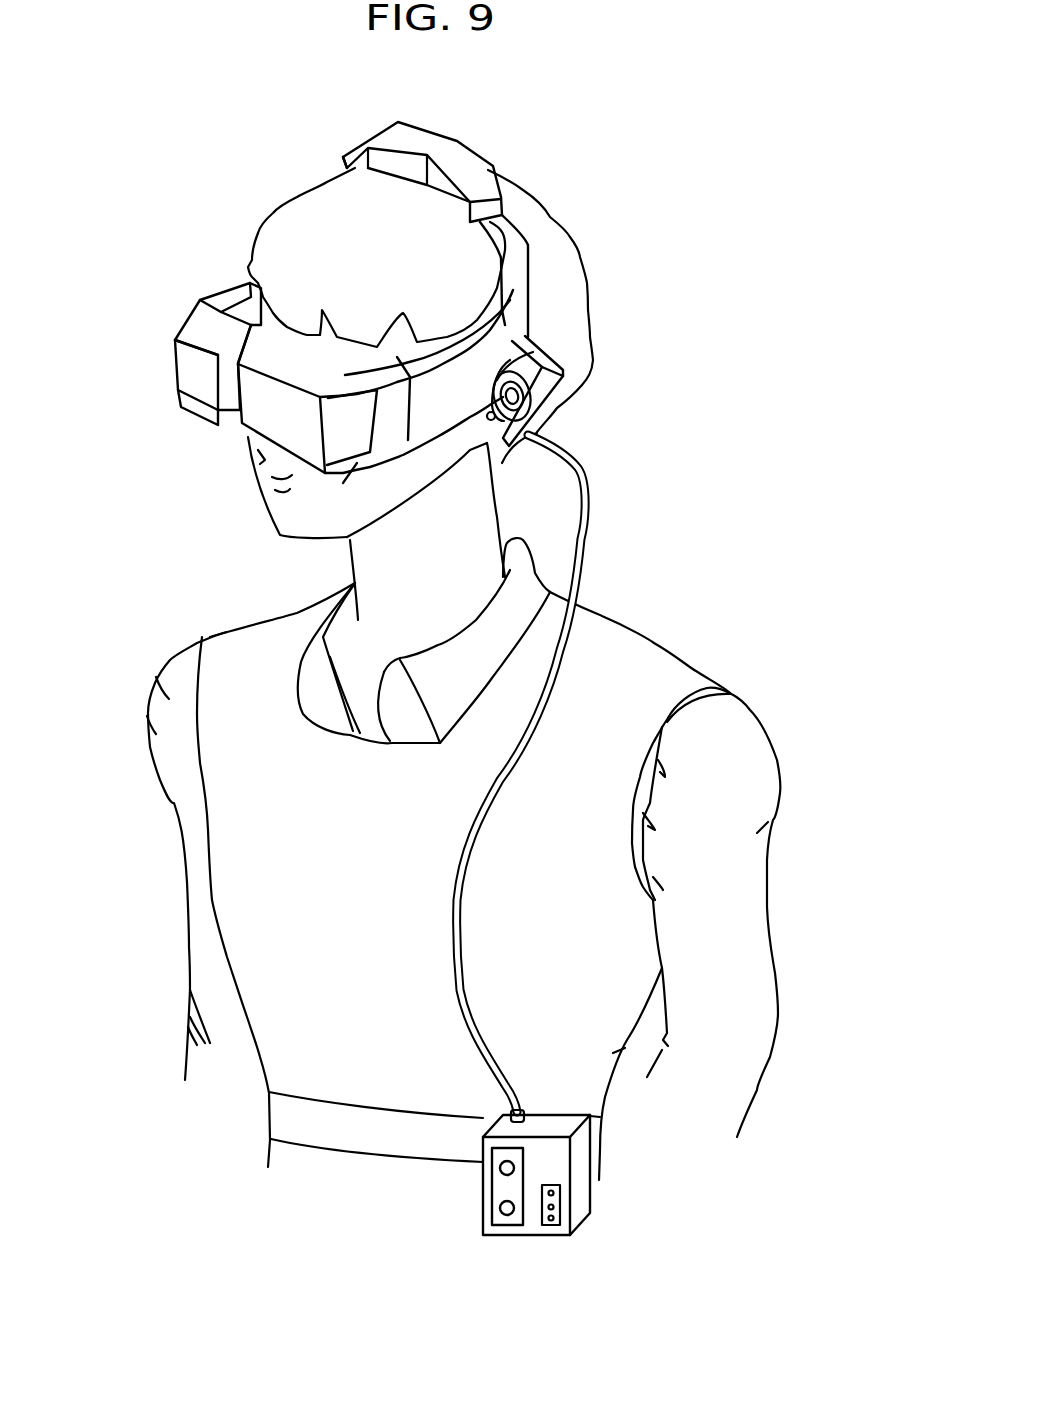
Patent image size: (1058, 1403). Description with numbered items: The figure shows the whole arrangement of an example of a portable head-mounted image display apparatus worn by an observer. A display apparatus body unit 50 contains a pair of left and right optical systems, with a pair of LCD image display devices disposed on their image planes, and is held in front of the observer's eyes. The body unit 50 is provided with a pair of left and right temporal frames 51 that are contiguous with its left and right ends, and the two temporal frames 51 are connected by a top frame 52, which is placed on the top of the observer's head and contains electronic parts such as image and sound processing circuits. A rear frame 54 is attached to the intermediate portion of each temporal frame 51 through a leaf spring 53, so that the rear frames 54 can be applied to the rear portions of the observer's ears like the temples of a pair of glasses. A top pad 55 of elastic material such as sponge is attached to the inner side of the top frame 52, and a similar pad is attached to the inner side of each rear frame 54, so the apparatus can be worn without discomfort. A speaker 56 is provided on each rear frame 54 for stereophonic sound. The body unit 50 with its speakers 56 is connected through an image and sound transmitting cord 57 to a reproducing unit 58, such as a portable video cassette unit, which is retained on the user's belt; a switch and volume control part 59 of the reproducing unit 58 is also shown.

The display apparatus body unit 50 is at (357, 468).
The temporal frame 51 is at (518, 285).
The top frame 52 is at (467, 168).
The leaf spring 53 is at (542, 347).
The rear frame 54 is at (527, 397).
The top pad 55 is at (403, 170).
The speaker 56 is at (513, 403).
The image and sound transmitting cord 57 is at (580, 550).
The reproducing unit 58 is at (478, 1200).
The switch and volume control part 59 is at (557, 1206).